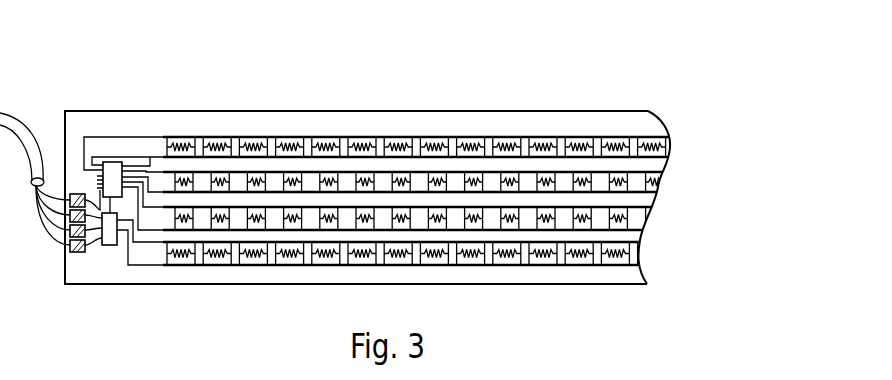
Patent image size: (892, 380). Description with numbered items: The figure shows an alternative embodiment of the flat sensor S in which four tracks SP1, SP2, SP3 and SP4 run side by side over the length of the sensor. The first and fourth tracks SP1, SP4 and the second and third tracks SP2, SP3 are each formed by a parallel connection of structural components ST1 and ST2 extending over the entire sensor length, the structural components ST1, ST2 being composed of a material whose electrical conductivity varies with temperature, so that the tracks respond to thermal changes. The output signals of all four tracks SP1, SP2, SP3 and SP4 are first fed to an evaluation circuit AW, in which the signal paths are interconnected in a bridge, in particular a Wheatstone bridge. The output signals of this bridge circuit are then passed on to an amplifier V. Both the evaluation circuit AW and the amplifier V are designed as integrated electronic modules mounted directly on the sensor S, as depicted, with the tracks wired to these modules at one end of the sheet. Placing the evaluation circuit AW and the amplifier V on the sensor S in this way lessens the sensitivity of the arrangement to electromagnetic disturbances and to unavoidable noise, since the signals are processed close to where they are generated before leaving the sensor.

The flat sensor S is at (417, 87).
The amplifier V is at (108, 168).
The evaluation circuit AW is at (110, 247).
The structural component ST1 is at (176, 172).
The structural component ST2 is at (178, 163).
The first track SP1 is at (682, 147).
The second track SP2 is at (682, 183).
The third track SP3 is at (682, 219).
The fourth track SP4 is at (682, 256).